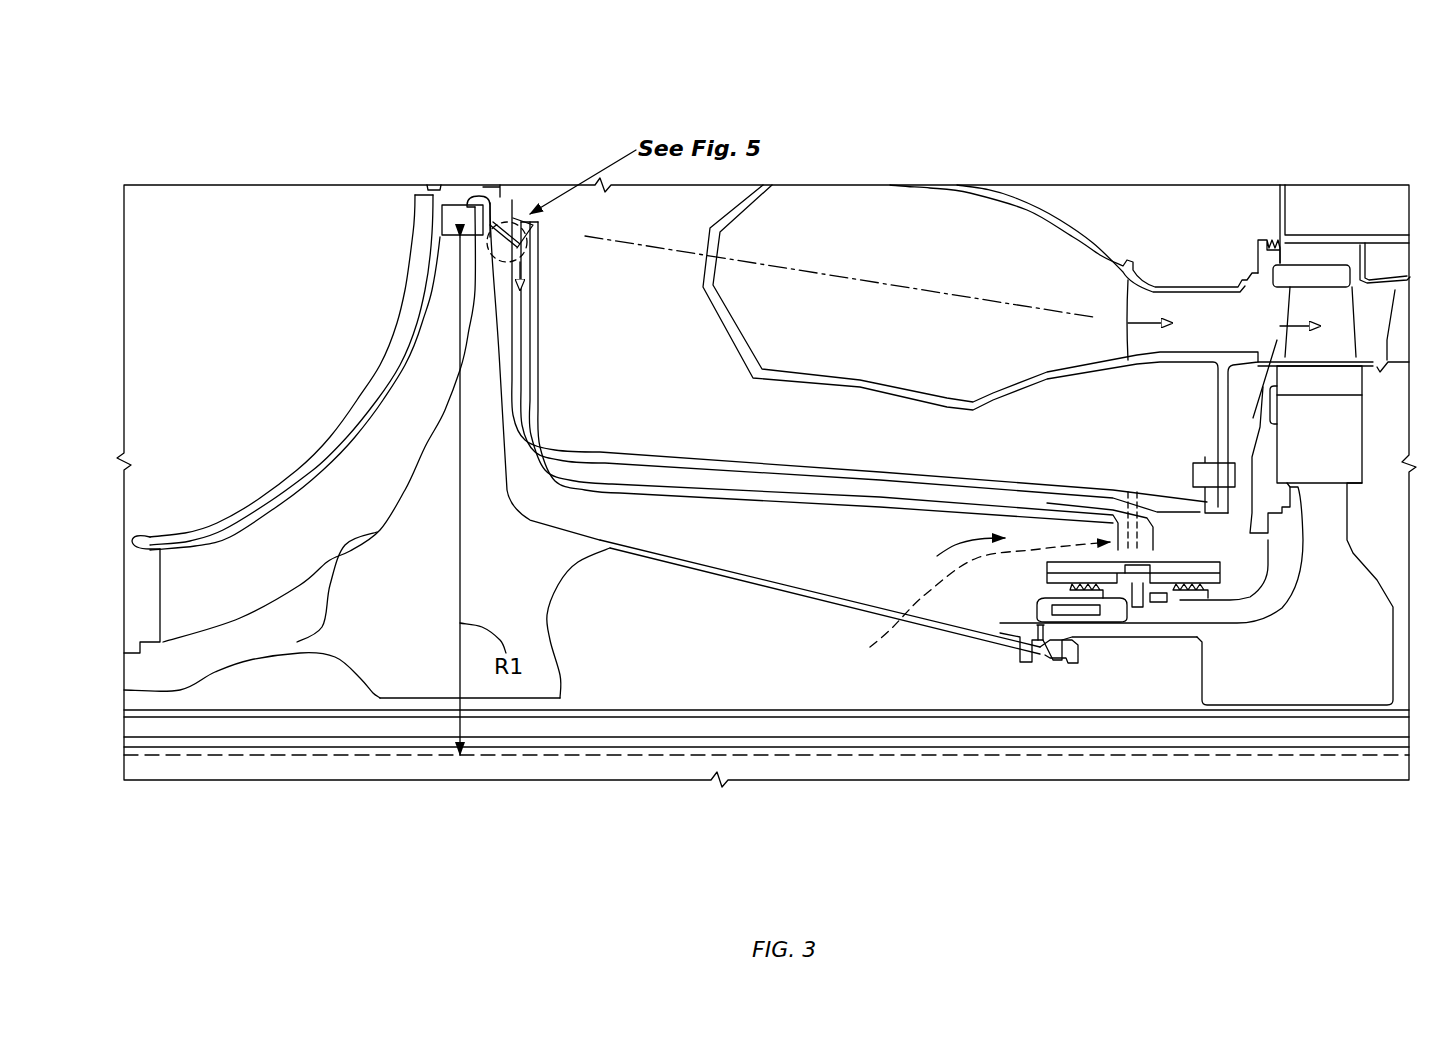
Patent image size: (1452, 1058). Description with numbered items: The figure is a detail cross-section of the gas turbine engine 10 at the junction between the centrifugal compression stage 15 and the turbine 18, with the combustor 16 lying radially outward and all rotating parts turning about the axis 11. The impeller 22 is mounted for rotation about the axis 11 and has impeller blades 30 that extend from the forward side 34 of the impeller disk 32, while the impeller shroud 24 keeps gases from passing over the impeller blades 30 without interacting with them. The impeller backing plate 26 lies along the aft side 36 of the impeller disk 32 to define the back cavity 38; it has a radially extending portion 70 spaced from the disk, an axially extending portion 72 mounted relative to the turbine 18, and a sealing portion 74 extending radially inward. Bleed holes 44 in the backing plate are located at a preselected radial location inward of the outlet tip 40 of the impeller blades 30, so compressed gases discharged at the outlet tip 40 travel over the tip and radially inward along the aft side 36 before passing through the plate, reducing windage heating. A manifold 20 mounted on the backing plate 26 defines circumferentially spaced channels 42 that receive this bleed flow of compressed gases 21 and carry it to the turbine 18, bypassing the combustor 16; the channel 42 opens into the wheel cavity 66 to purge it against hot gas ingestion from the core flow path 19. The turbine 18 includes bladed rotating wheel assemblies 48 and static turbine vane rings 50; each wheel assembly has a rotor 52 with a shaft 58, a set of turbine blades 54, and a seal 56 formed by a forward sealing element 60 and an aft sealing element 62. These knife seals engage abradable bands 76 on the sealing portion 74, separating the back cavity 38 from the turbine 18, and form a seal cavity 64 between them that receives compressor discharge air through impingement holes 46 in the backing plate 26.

The gas turbine engine 10 is at (245, 100).
The axis 11 is at (185, 755).
The centrifugal compression stage 15 is at (377, 238).
The combustor 16 is at (892, 173).
The turbine 18 is at (1240, 190).
The core flow path 19 is at (1128, 323).
The manifold 20 is at (606, 446).
The bleed flow of compressed gases 21 is at (533, 230).
The impeller 22 is at (287, 677).
The impeller shroud 24 is at (283, 472).
The impeller backing plate 26 is at (488, 397).
The impeller blades 30 is at (150, 586).
The impeller disk 32 is at (400, 606).
The forward side 34 is at (321, 595).
The aft side 36 is at (537, 548).
The back cavity 38 is at (937, 595).
The outlet tip 40 is at (468, 188).
The channels 42 is at (542, 390).
The bleed holes 44 is at (508, 215).
The impingement holes 46 is at (1045, 563).
The bladed rotating wheel assemblies 48 is at (1345, 250).
The turbine vane rings 50 is at (1190, 250).
The rotor 52 is at (1372, 590).
The turbine blades 54 is at (1367, 330).
The seal 56 is at (1148, 693).
The shaft 58 is at (848, 705).
The forward sealing element 60 is at (1035, 588).
The aft sealing element 62 is at (1218, 597).
The seal cavity 64 is at (1137, 593).
The wheel cavity 66 is at (1270, 548).
The radially extending portion 70 is at (505, 367).
The axially extending portion 72 is at (685, 500).
The sealing portion 74 is at (963, 559).
The abradable bands 76 is at (1217, 576).